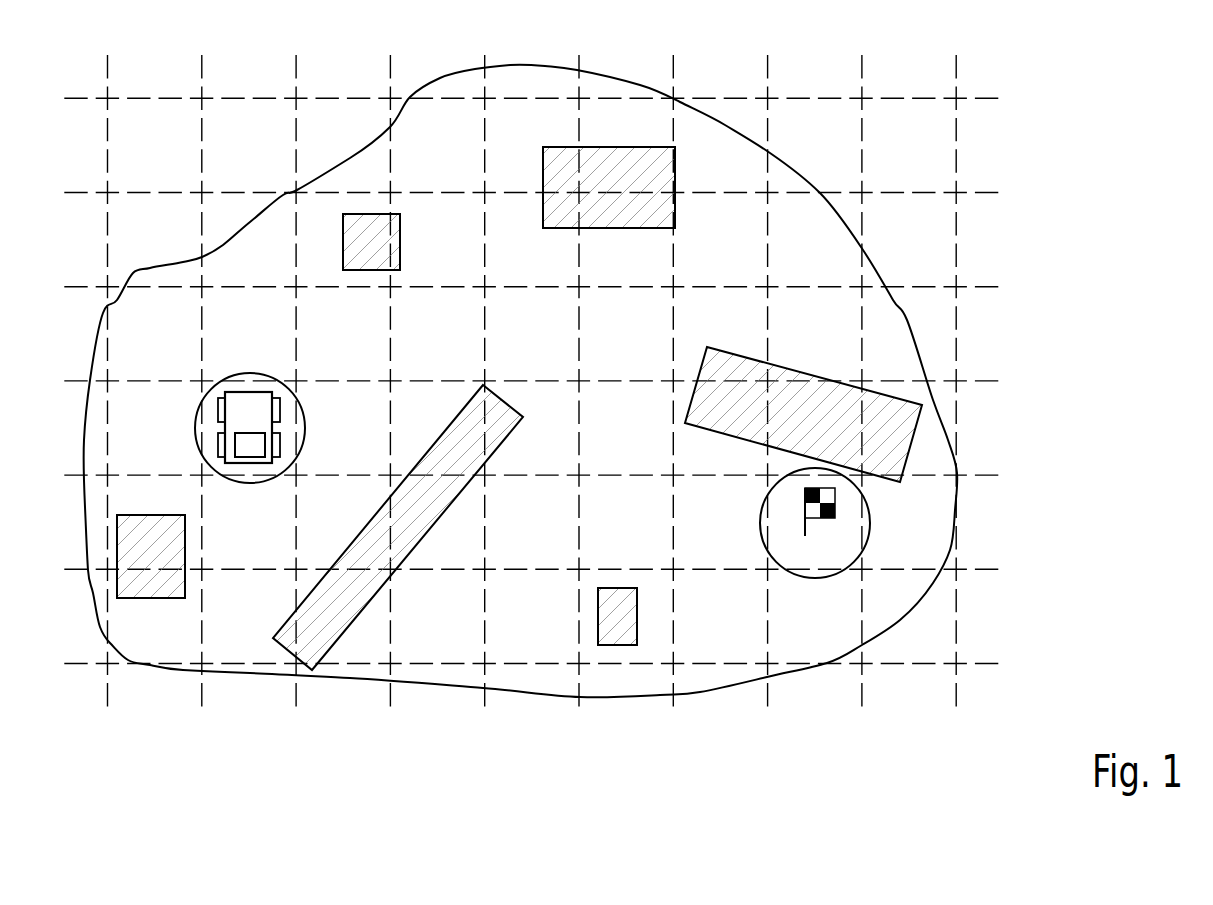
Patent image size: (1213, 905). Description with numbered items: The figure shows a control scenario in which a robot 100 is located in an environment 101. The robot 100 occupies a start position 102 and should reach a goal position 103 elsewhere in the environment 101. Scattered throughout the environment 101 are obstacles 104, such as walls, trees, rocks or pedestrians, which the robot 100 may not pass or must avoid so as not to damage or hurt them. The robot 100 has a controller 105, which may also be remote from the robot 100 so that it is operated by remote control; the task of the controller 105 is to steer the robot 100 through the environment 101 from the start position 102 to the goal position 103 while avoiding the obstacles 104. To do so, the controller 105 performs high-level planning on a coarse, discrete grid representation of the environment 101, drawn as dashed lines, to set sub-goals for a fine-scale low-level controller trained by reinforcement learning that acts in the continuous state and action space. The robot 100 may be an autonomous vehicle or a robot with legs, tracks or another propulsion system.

The robot 100 is at (248, 392).
The environment 101 is at (782, 158).
The start position 102 is at (193, 428).
The goal position 103 is at (760, 522).
The obstacles 104 is at (402, 240).
The controller 105 is at (250, 465).